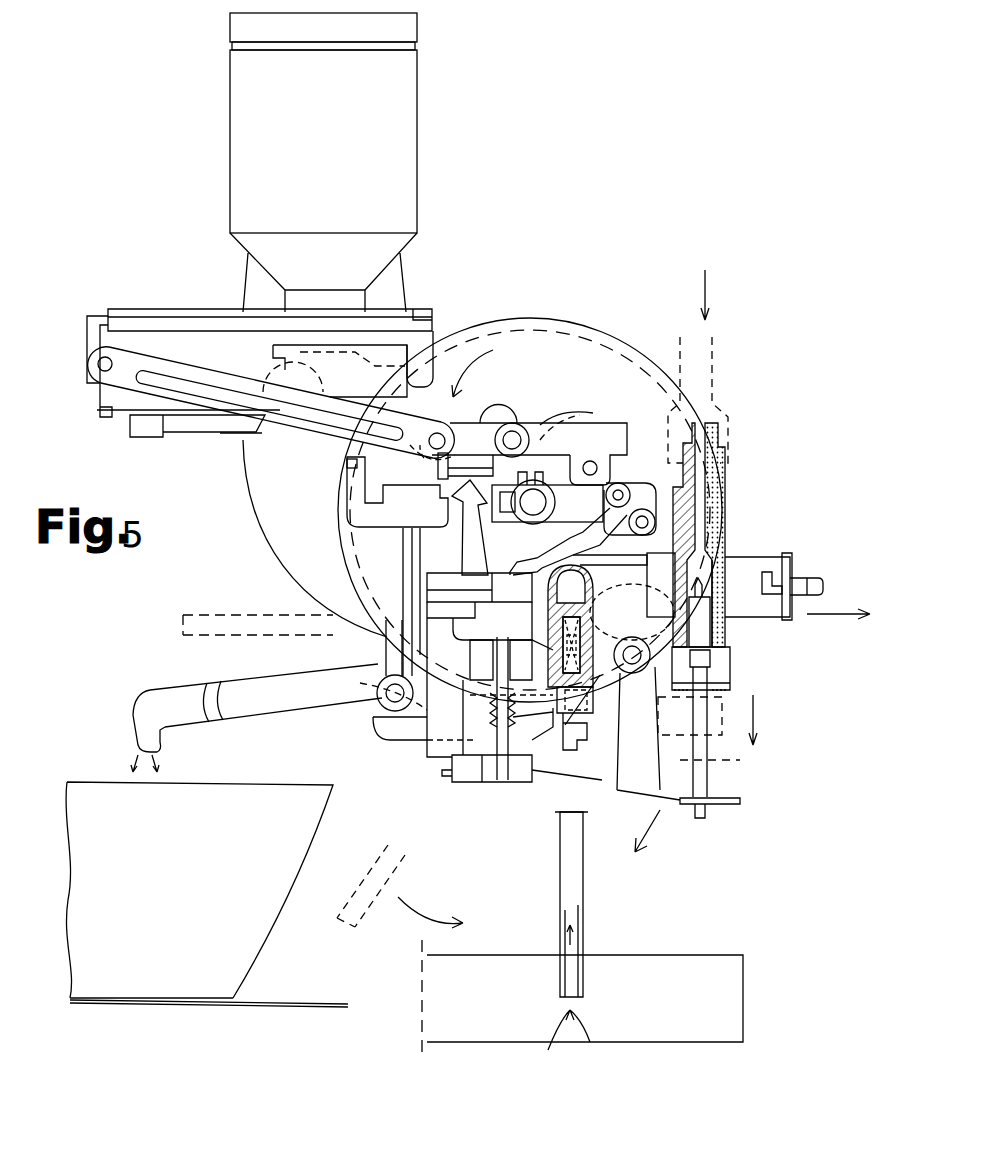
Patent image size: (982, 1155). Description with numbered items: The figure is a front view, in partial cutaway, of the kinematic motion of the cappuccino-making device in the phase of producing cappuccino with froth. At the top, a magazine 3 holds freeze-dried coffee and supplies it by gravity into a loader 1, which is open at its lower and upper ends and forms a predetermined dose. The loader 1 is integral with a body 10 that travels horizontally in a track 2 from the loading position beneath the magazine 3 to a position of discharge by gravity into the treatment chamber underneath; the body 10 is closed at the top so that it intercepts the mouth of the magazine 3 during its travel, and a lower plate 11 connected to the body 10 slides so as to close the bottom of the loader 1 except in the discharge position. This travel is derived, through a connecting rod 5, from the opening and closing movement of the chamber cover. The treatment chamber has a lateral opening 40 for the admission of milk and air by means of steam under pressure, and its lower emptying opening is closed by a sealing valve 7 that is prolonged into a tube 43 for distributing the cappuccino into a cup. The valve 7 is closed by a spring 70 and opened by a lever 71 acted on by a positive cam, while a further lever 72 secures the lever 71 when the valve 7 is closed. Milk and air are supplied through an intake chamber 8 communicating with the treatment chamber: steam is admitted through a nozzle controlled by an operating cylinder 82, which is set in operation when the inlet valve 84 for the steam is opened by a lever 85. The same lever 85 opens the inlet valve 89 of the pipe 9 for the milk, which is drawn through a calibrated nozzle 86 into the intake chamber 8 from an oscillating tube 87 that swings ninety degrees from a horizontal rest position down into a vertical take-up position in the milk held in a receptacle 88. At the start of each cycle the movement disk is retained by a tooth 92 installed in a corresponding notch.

The loader 1 is at (350, 360).
The track 2 is at (143, 317).
The magazine 3 is at (232, 138).
The connecting rod 5 is at (128, 381).
The sealing valve 7 is at (502, 750).
The intake chamber 8 is at (703, 617).
The pipe 9 is at (722, 645).
The body 10 is at (97, 316).
The lower plate 11 is at (133, 408).
The lateral opening 40 is at (400, 588).
The tube 43 is at (265, 705).
The spring 70 is at (490, 740).
The lever 71 is at (437, 753).
The further lever 72 is at (725, 531).
The operating cylinder 82 is at (775, 558).
The inlet valve 84 is at (715, 622).
The lever 85 is at (590, 755).
The calibrated nozzle 86 is at (723, 687).
The oscillating tube 87 is at (222, 632).
The receptacle 88 is at (750, 1000).
The inlet valve 89 is at (642, 670).
The tooth 92 is at (347, 466).